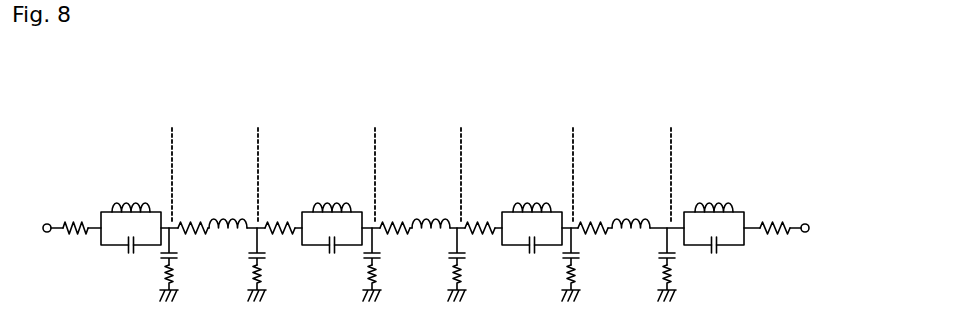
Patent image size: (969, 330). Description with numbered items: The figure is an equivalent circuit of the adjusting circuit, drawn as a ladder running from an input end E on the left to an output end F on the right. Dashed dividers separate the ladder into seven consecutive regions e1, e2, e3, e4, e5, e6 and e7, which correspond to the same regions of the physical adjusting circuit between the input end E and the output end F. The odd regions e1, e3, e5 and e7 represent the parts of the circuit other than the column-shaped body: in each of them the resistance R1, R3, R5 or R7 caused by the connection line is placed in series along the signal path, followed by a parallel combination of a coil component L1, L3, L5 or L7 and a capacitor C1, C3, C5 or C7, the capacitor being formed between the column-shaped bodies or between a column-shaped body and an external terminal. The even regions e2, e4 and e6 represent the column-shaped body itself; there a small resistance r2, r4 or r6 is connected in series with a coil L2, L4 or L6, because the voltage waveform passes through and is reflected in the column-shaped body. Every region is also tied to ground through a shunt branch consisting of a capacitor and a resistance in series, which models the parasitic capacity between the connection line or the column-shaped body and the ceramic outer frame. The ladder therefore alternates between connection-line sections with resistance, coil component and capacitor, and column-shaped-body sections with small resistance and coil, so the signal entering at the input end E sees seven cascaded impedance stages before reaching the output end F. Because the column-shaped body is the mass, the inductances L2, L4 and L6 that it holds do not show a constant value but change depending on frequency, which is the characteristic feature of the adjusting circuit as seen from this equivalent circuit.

The input end E is at (38, 228).
The output end F is at (814, 228).
The region e1 is at (136, 217).
The region e2 is at (238, 217).
The region e3 is at (339, 217).
The region e4 is at (439, 217).
The region e5 is at (538, 217).
The region e6 is at (642, 217).
The region e7 is at (737, 204).
The resistance R1 is at (75, 211).
The coil component L1 is at (131, 195).
The capacitor C1 is at (134, 258).
The small resistance r2 is at (193, 211).
The coil L2 is at (228, 208).
The resistance R3 is at (280, 211).
The coil component L3 is at (332, 195).
The capacitor C3 is at (336, 258).
The small resistance r4 is at (395, 211).
The coil L4 is at (431, 208).
The resistance R5 is at (480, 211).
The coil component L5 is at (532, 195).
The capacitor C5 is at (538, 258).
The small resistance r6 is at (593, 211).
The coil L6 is at (631, 208).
The coil component L7 is at (714, 195).
The capacitor C7 is at (726, 256).
The resistance R7 is at (775, 211).